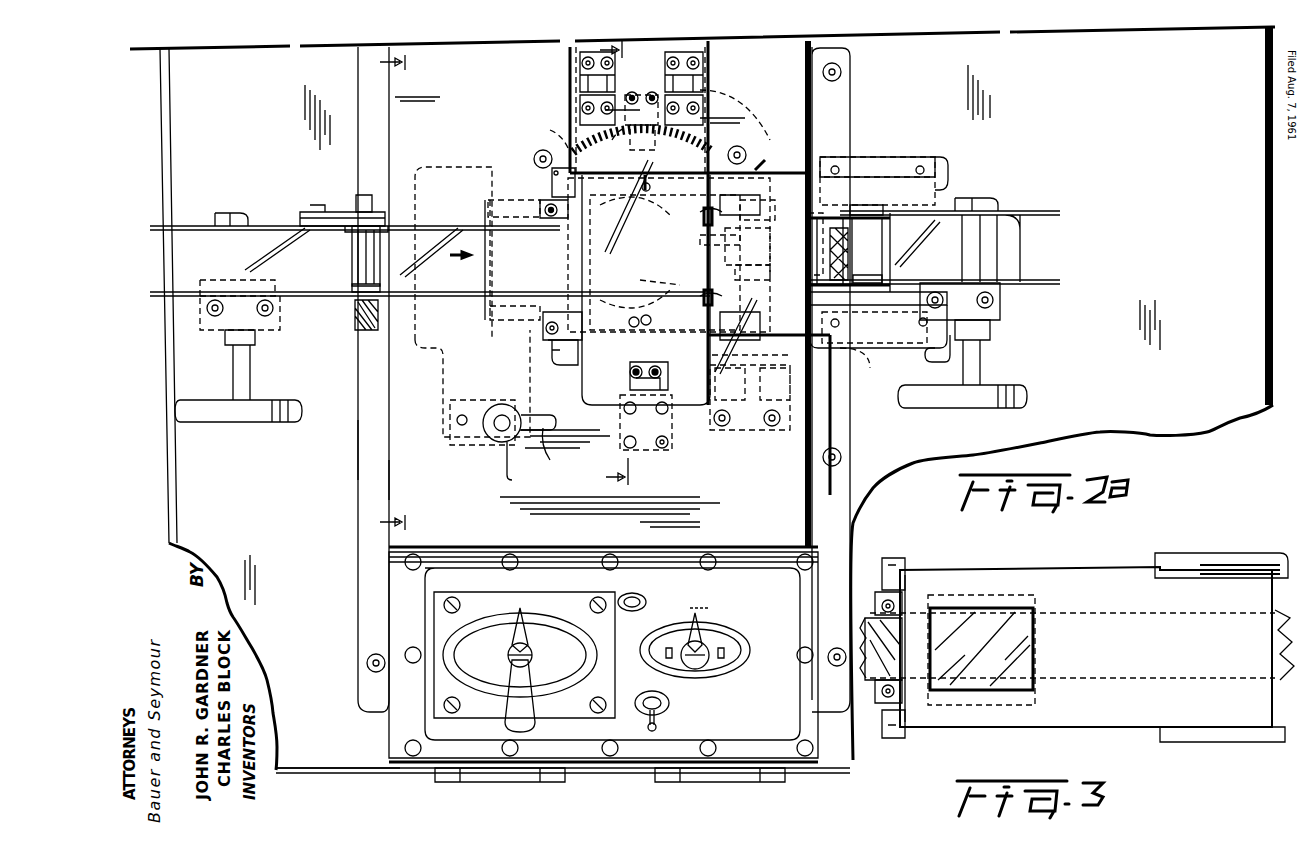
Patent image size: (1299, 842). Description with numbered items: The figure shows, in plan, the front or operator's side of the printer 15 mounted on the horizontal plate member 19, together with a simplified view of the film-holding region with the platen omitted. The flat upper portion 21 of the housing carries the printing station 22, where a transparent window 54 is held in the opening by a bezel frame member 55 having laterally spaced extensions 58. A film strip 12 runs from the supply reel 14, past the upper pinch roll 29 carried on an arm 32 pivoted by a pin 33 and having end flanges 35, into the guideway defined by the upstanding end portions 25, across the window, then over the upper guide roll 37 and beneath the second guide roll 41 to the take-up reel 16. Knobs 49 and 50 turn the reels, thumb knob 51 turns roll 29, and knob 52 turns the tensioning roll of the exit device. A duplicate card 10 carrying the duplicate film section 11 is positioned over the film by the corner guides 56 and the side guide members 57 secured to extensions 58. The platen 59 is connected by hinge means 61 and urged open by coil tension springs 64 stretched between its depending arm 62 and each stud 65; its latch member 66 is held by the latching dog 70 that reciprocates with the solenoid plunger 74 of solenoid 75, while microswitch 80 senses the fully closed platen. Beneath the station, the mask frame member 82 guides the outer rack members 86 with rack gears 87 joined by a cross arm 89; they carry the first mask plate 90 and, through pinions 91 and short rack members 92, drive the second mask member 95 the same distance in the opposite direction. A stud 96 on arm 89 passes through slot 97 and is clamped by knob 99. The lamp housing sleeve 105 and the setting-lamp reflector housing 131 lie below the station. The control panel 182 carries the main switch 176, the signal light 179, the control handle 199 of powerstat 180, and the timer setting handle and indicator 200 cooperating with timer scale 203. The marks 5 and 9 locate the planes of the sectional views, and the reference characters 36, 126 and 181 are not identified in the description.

In FIG. 2A, the section line 5- 5 is at (398, 294).
In FIG. 2A, the section line 9- 9 is at (620, 264).
In FIG. 2A, the duplicate card 10 is at (772, 177).
In FIG. 3, the duplicate card 10 is at (1075, 574).
In FIG. 2A, the duplicate film section 11 is at (670, 282).
In FIG. 3, the duplicate film section 11 is at (992, 705).
In FIG. 2A, the film strip 12 is at (335, 293).
In FIG. 3, the film strip 12 is at (1090, 680).
In FIG. 2A, the supply reel 14 is at (222, 245).
In FIG. 2A, the printer 15 is at (380, 444).
In FIG. 2A, the take-up reel 16 is at (1022, 248).
In FIG. 2A, the horizontal plate member 19 is at (345, 768).
In FIG. 2A, the upper portion of housing 21 is at (395, 470).
In FIG. 2A, the printing station 22 is at (767, 167).
In FIG. 2A, the upstanding end portions 25 is at (548, 205).
In FIG. 3, the upstanding end portions 25 is at (878, 598).
In FIG. 2A, the upper pinch roll 29 is at (378, 258).
In FIG. 2A, the arm 32 is at (330, 212).
In FIG. 2A, the pin 33 is at (312, 212).
In FIG. 2A, the end flanges 35 is at (345, 232).
In FIG. 2A, the screw 36 is at (378, 222).
In FIG. 2A, the upper guide roll 37 is at (760, 278).
In FIG. 2A, the second guide roll 41 is at (884, 243).
In FIG. 2A, the knob 49 is at (268, 425).
In FIG. 2A, the knob 50 is at (1012, 388).
In FIG. 2A, the thumb knob 51 is at (355, 322).
In FIG. 2A, the knob 52 is at (856, 348).
In FIG. 2A, the transparent window 54 is at (630, 340).
In FIG. 2A, the bezel frame member 55 is at (728, 322).
In FIG. 2A, the guides 56 is at (552, 186).
In FIG. 3, the guides 56 is at (905, 563).
In FIG. 2A, the guide members 57 is at (942, 162).
In FIG. 3, the guide members 57 is at (1200, 556).
In FIG. 2A, the extensions 58 is at (880, 172).
In FIG. 2A, the platen 59 is at (698, 149).
In FIG. 2A, the hinge means 61 is at (582, 88).
In FIG. 2A, the arm 62 is at (640, 145).
In FIG. 2A, the coil tension springs 64 is at (722, 88).
In FIG. 2A, the stud 65 is at (538, 157).
In FIG. 2A, the latch member 66 is at (652, 364).
In FIG. 2A, the latching dog 70 is at (625, 402).
In FIG. 2A, the solenoid plunger 74 is at (712, 416).
In FIG. 2A, the solenoid 75 is at (748, 368).
In FIG. 2A, the microswitch 80 is at (652, 452).
In FIG. 2A, the mask frame member 82 is at (652, 174).
In FIG. 2A, the outer rack members 86 is at (652, 202).
In FIG. 2A, the rack gear 87 is at (648, 232).
In FIG. 2A, the cross arm 89 is at (492, 298).
In FIG. 2A, the first mask plate 90 is at (590, 270).
In FIG. 2A, the pinion 91 is at (722, 210).
In FIG. 2A, the short rack members 92 is at (758, 260).
In FIG. 2A, the second mask member 95 is at (768, 205).
In FIG. 2A, the stud 96 is at (515, 410).
In FIG. 2A, the slot 97 is at (546, 443).
In FIG. 2A, the knob 99 is at (519, 464).
In FIG. 2A, the lamp housing sleeve 105 is at (712, 58).
In FIG. 2A, the foot 126 is at (490, 775).
In FIG. 2A, the reflector housing 131 is at (432, 360).
In FIG. 2A, the main switch 176 is at (672, 708).
In FIG. 2A, the signal light 179 is at (632, 612).
In FIG. 2A, the powerstat 180 is at (715, 660).
In FIG. 2A, the pointer hub 181 is at (506, 658).
In FIG. 2A, the control panel 182 is at (620, 575).
In FIG. 2A, the control handle 199 is at (705, 638).
In FIG. 2A, the setting handle and indicator 200 is at (532, 672).
In FIG. 2A, the timer scale 203 is at (510, 620).